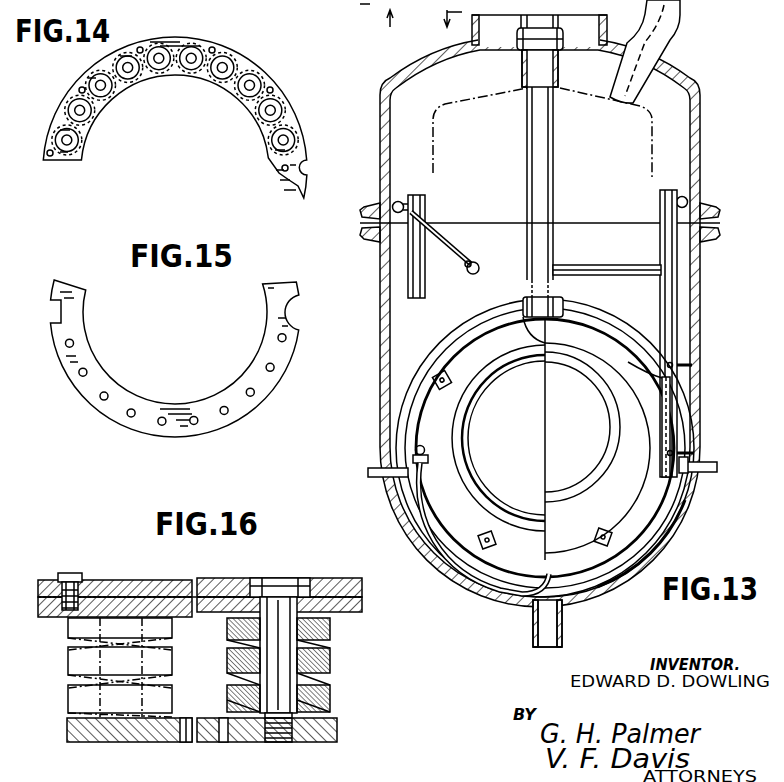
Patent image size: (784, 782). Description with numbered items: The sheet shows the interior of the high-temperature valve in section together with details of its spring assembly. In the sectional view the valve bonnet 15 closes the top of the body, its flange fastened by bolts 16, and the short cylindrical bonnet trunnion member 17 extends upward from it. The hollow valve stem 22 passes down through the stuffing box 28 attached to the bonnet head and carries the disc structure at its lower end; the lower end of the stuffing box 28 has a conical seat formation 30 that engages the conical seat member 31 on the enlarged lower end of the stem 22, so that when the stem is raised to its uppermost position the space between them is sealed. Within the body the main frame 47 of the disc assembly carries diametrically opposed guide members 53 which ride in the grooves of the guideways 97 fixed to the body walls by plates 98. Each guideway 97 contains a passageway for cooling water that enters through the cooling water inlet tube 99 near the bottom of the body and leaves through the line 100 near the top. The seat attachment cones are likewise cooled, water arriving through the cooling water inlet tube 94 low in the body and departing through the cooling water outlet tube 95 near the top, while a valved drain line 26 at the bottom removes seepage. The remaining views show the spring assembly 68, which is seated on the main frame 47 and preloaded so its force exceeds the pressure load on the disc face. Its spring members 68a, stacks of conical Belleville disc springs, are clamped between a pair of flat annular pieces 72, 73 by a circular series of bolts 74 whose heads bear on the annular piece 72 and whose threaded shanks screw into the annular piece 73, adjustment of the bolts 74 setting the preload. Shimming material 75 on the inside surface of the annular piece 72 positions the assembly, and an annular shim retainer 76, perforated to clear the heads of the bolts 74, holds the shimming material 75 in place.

In FIG. 13, the valve bonnet 15 is at (712, 111).
In FIG. 14, the bolts 16 is at (263, 145).
In FIG. 13, the bonnet trunnion member 17 is at (607, 26).
In FIG. 13, the valve stem 22 is at (546, 163).
In FIG. 13, the valved drain line 26 is at (537, 628).
In FIG. 13, the stuffing box 28 is at (522, 71).
In FIG. 13, the conical seat formation 30 is at (525, 88).
In FIG. 13, the conical seat member 31 is at (528, 298).
In FIG. 13, the main frame 47 is at (604, 341).
In FIG. 13, the guide members 53 is at (673, 388).
In FIG. 16, the spring assembly 68 is at (342, 652).
In FIG. 16, the spring members 68a is at (328, 701).
In FIG. 16, the annular piece 72 is at (55, 612).
In FIG. 15, the annular piece 73 is at (92, 393).
In FIG. 16, the annular piece 73 is at (87, 736).
In FIG. 14, the bolts 74 is at (187, 68).
In FIG. 15, the bolts 74 is at (222, 407).
In FIG. 16, the bolts 74 is at (283, 582).
In FIG. 16, the shimming material 75 is at (133, 597).
In FIG. 14, the shim retainer 76 is at (245, 66).
In FIG. 16, the shim retainer 76 is at (178, 590).
In FIG. 13, the cooling water inlet tube 94 is at (503, 578).
In FIG. 13, the cooling water outlet tube 95 is at (593, 267).
In FIG. 13, the guideways 97 is at (678, 302).
In FIG. 13, the plates 98 is at (692, 451).
In FIG. 13, the cooling water inlet tube 99 is at (707, 473).
In FIG. 13, the line 100 is at (687, 196).